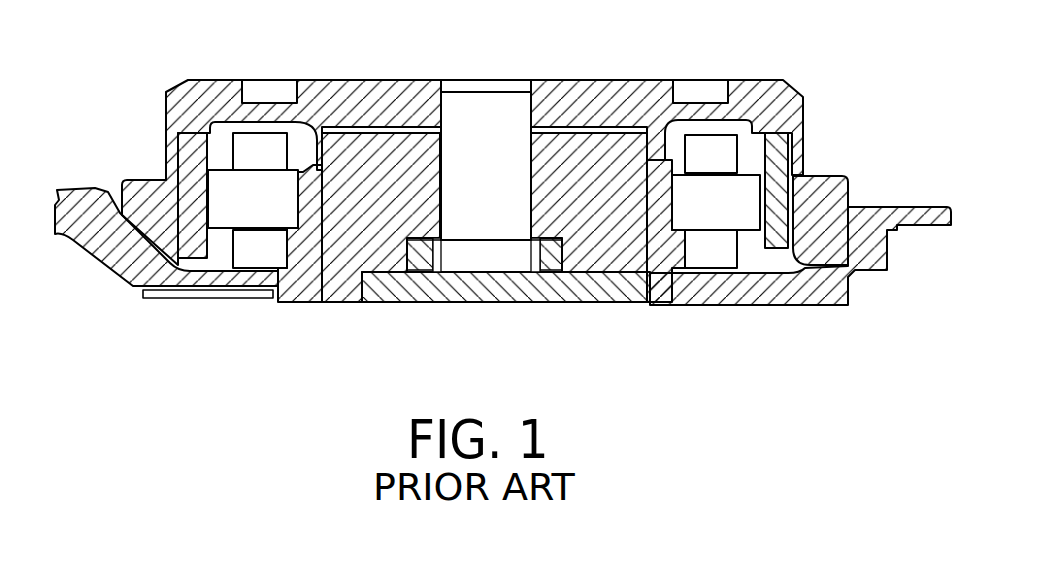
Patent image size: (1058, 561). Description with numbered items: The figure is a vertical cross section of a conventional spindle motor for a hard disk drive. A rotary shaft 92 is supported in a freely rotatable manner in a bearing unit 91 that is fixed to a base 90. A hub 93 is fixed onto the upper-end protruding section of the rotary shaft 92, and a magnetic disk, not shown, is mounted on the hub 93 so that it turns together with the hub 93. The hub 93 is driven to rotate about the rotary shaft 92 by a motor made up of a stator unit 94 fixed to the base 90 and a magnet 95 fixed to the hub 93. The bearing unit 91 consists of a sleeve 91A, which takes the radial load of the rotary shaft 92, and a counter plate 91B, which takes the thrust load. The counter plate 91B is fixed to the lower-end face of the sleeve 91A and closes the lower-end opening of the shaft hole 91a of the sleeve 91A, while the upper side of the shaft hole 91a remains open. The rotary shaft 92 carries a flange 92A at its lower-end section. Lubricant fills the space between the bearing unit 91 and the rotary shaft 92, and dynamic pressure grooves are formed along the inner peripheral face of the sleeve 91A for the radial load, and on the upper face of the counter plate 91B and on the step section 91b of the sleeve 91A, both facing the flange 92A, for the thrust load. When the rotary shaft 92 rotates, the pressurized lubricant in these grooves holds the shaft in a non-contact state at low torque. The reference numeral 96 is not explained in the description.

The base 90 is at (697, 304).
The bearing unit 91 is at (590, 127).
The sleeve 91A is at (396, 133).
The counter plate 91B is at (442, 302).
The shaft hole 91a is at (443, 190).
The step section 91b is at (548, 270).
The rotary shaft 92 is at (484, 91).
The flange 92A is at (418, 270).
The hub 93 is at (350, 80).
The stator unit 94 is at (745, 172).
The magnet 95 is at (757, 187).
The bearing 96 is at (214, 152).